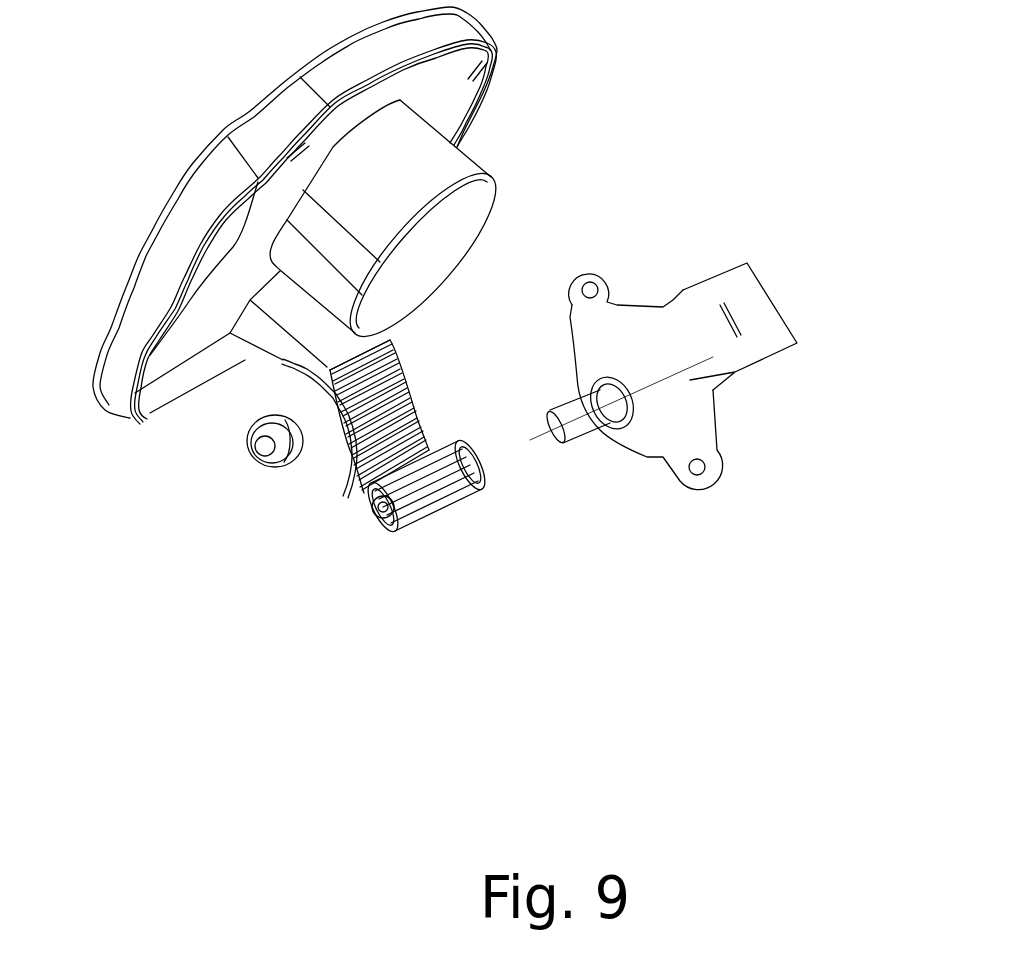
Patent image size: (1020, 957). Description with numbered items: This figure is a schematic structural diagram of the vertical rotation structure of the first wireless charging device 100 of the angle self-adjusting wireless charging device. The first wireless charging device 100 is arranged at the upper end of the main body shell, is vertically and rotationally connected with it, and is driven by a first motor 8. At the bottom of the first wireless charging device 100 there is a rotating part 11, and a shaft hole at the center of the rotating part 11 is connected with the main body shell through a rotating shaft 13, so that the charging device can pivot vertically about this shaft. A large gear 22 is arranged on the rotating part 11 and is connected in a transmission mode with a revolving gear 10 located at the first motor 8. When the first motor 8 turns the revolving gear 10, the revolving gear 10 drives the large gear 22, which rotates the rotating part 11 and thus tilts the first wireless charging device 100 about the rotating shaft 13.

The first wireless charging device 100 is at (215, 135).
The rotating part 11 is at (282, 357).
The rotating shaft 13 is at (253, 477).
The large gear 22 is at (325, 492).
The revolving gear 10 is at (522, 534).
The first motor 8 is at (755, 475).